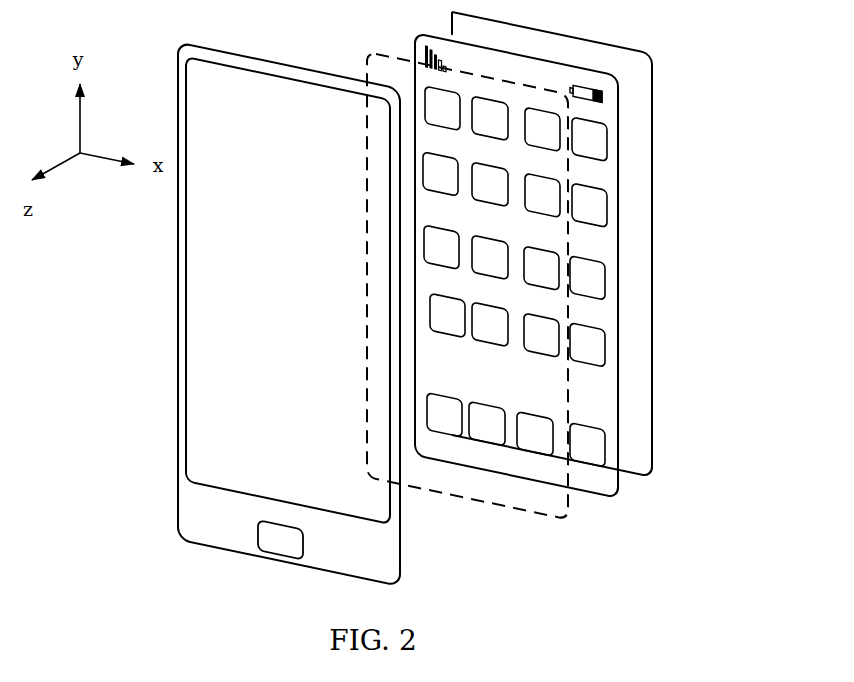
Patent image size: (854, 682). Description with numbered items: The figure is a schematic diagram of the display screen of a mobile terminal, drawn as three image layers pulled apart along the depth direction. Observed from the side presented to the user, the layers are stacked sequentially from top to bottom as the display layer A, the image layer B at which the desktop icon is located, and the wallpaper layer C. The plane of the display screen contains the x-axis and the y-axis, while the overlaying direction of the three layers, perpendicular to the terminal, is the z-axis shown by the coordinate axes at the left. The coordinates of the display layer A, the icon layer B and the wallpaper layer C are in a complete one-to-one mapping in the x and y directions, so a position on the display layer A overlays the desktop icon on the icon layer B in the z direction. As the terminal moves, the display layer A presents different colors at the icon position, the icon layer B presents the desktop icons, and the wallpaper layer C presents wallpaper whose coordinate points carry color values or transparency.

The display layer A is at (568, 397).
The image layer at which the desktop icon is located B is at (617, 275).
The wallpaper layer C is at (653, 157).